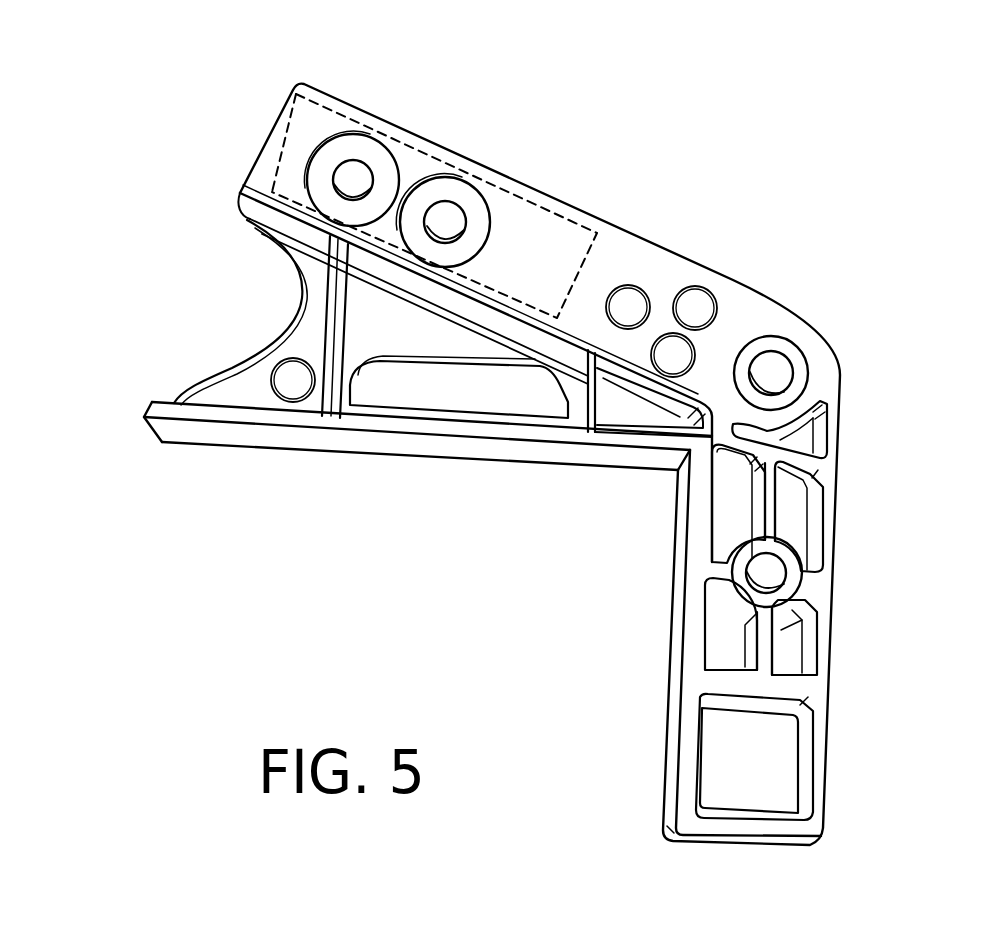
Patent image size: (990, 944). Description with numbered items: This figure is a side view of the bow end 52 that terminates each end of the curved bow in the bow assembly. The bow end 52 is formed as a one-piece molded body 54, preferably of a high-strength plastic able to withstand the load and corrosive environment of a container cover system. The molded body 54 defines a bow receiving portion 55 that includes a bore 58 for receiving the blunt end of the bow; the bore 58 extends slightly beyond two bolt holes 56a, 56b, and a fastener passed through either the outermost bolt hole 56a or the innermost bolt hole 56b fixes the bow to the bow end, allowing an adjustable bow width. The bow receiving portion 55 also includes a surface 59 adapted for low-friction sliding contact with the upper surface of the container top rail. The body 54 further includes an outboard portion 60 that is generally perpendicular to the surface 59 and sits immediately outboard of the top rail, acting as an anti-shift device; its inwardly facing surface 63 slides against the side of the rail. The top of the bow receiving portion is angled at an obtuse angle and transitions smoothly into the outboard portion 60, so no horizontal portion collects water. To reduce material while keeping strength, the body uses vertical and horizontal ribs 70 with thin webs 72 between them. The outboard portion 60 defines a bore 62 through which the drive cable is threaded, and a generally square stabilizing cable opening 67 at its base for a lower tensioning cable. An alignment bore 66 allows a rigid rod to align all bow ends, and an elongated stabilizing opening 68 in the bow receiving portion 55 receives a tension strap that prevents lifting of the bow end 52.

The bow end element 52 is at (712, 269).
The one-piece molded body 54 is at (563, 243).
The bow receiving portion 55 is at (420, 150).
The bolt hole 56a is at (357, 170).
The bolt hole 56b is at (446, 213).
The bore 58 is at (282, 147).
The surface 59 is at (365, 445).
The outboard portion 60 is at (808, 668).
The bore 62 is at (758, 585).
The inwardly facing surface 63 is at (695, 642).
The alignment bore 66 is at (778, 373).
The stabilizing cable opening 67 is at (755, 758).
The stabilizing opening 68 is at (493, 395).
The ribs 70 is at (325, 380).
The webs 72 is at (390, 299).